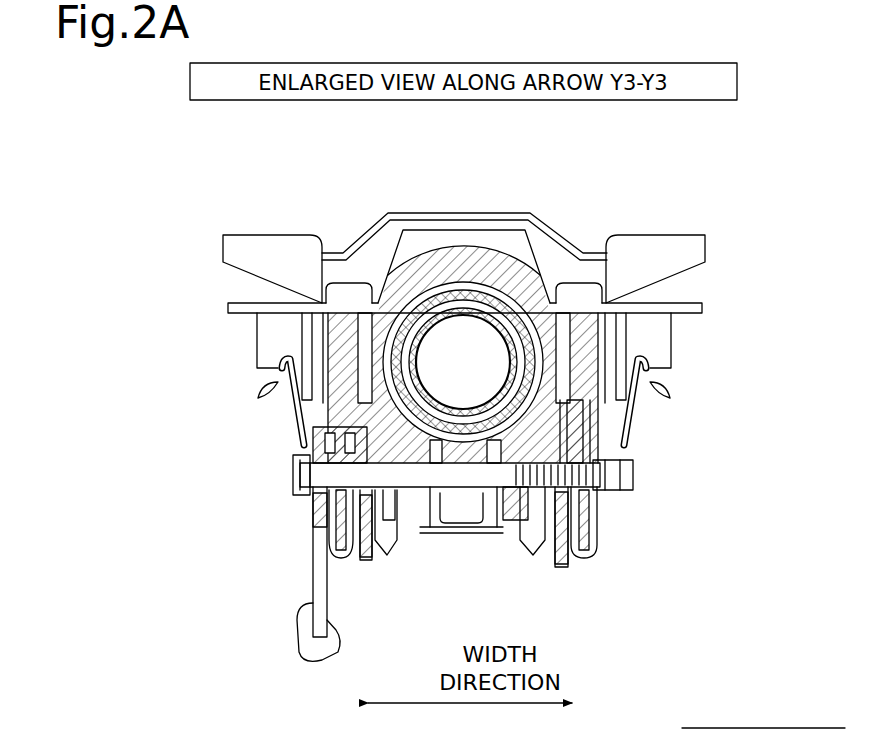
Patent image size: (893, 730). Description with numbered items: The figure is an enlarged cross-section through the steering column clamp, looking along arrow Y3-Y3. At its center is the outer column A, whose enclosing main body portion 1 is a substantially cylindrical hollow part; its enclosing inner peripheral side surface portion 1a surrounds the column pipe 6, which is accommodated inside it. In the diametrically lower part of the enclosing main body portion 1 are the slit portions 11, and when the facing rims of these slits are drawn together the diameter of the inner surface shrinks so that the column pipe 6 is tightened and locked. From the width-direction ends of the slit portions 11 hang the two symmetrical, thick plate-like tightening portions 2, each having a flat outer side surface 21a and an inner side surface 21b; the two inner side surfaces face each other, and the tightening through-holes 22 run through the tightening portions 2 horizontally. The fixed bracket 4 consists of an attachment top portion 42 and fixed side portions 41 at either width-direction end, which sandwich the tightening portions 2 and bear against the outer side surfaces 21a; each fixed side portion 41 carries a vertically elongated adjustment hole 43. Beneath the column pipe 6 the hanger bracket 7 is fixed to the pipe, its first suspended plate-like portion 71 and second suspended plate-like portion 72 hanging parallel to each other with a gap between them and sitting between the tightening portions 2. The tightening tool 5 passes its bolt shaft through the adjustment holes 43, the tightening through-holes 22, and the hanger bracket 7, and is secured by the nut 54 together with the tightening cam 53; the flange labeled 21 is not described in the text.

The enclosing main body portion 1 is at (521, 228).
The enclosing inner peripheral side surface portion 1a is at (527, 265).
The outer column A is at (497, 270).
The tightening portion 2 is at (400, 507).
The fixed bracket 4 is at (686, 300).
The tightening tool 5 is at (290, 488).
The column pipe 6 is at (420, 303).
The hanger bracket 7 is at (470, 535).
The slit portion 11 is at (417, 437).
The frame member 21 is at (557, 443).
The outer side surface 21a is at (363, 415).
The inner side surface 21b is at (557, 437).
The tightening through-hole 22 is at (386, 500).
The fixed side portion 41 is at (377, 560).
The attachment top portion 42 is at (518, 212).
The adjustment hole 43 is at (298, 493).
The tightening cam 53 is at (343, 557).
The nut 54 is at (608, 492).
The first suspended plate-like portion 71 is at (430, 537).
The second suspended plate-like portion 72 is at (508, 533).